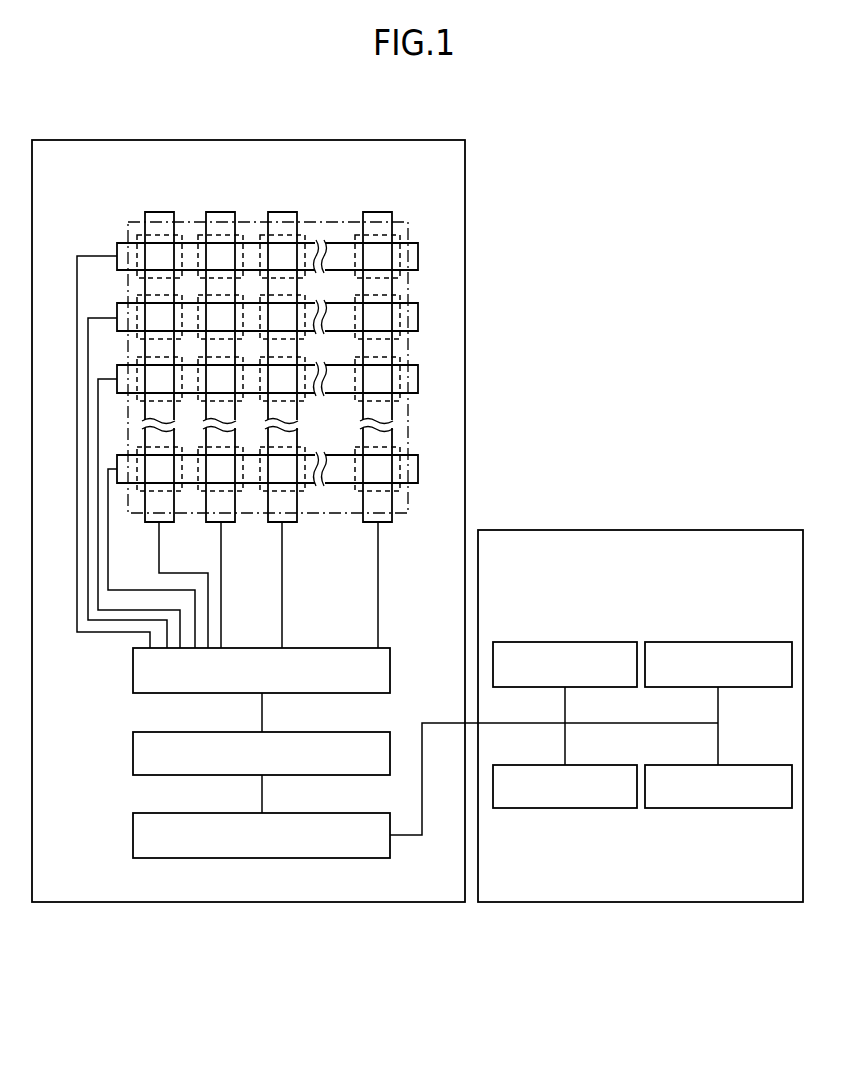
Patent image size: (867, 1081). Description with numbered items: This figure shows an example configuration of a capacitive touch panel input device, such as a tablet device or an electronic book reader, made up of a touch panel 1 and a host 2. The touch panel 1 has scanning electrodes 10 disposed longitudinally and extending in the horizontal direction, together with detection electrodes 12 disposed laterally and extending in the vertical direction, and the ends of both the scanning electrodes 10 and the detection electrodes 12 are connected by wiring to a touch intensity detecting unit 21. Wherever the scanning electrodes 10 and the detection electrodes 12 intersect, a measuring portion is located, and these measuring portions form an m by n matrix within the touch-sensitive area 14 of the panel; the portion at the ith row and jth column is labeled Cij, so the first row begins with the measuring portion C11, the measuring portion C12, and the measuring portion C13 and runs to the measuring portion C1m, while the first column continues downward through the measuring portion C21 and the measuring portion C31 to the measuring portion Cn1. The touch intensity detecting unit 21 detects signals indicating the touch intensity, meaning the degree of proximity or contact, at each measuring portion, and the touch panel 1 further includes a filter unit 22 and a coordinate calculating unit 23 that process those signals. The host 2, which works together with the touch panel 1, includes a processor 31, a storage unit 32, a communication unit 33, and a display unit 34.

The touch panel 1 is at (465, 172).
The host 2 is at (752, 530).
The scanning electrodes 10 is at (392, 215).
The detection electrodes 12 is at (418, 262).
The touch-sensitive area 14 is at (408, 419).
The touch intensity detecting unit 21 is at (133, 665).
The filter unit 22 is at (133, 748).
The coordinate calculating unit 23 is at (133, 831).
The processor 31 is at (600, 642).
The storage unit 32 is at (598, 808).
The communication unit 33 is at (742, 642).
The display unit 34 is at (742, 808).
The measuring portion C11 is at (139, 232).
The measuring portion C12 is at (221, 232).
The measuring portion C13 is at (291, 232).
The measuring portion C1m is at (360, 233).
The measuring portion C21 is at (137, 318).
The measuring portion C31 is at (137, 378).
The measuring portion Cn1 is at (150, 493).